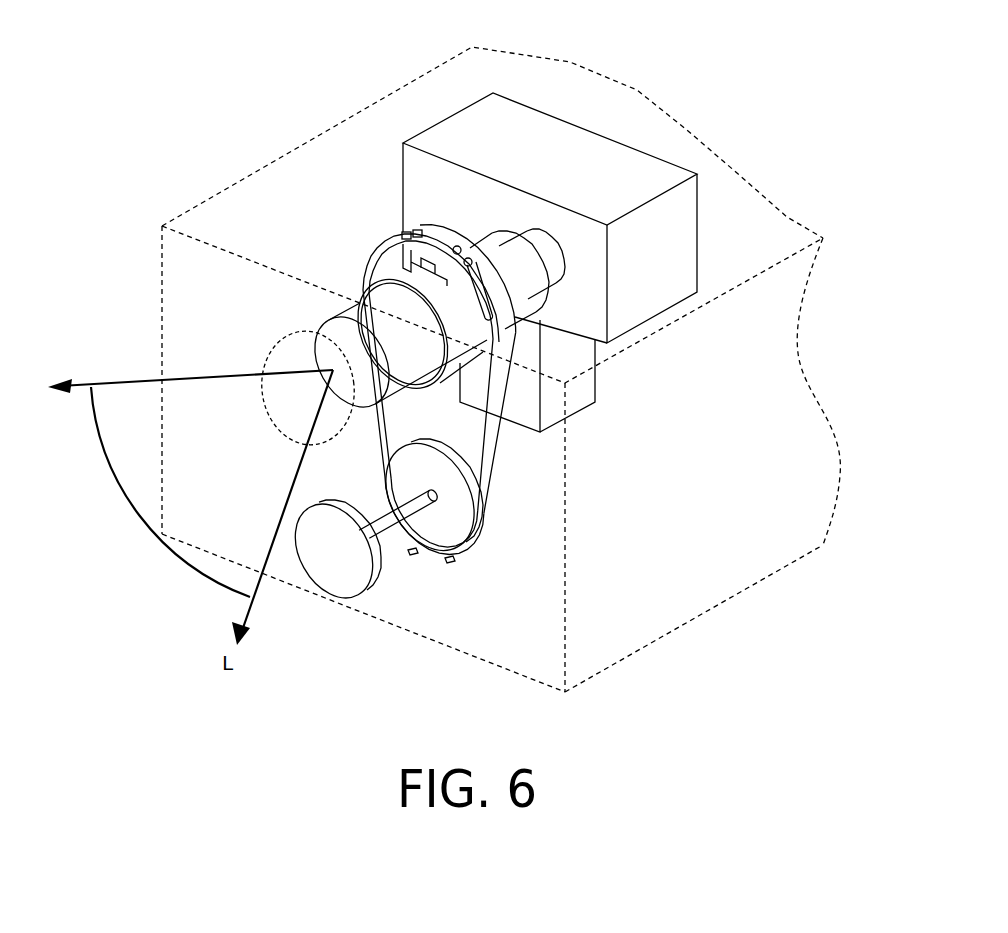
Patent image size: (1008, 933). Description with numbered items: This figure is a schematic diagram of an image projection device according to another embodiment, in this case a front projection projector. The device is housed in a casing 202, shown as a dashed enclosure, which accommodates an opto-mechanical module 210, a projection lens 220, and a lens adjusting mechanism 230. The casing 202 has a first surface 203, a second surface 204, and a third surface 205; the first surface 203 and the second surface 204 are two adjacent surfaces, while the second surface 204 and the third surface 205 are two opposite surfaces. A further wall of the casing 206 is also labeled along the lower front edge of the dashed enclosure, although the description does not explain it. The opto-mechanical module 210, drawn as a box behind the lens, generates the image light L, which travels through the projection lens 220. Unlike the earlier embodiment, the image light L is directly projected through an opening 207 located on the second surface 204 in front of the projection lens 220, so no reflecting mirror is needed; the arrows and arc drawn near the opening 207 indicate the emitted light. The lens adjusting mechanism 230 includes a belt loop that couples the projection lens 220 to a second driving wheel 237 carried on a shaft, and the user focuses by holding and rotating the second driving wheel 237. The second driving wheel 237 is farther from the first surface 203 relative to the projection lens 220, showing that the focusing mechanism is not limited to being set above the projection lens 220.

The casing 202 is at (103, 100).
The first surface 203 is at (260, 170).
The second surface 204 is at (457, 651).
The third surface 205 is at (800, 353).
The front wall of housing 206 is at (690, 622).
The opening 207 is at (262, 412).
The opto-mechanical module 210 is at (550, 143).
The projection lens 220 is at (338, 276).
The lens adjusting mechanism 230 is at (503, 508).
The second driving wheel 237 is at (330, 562).